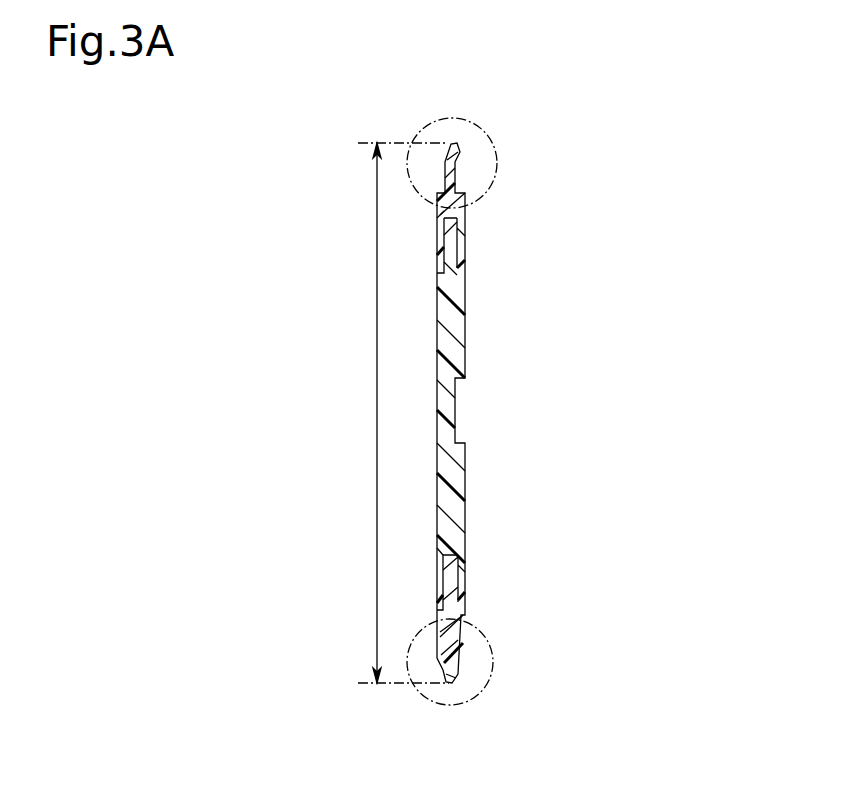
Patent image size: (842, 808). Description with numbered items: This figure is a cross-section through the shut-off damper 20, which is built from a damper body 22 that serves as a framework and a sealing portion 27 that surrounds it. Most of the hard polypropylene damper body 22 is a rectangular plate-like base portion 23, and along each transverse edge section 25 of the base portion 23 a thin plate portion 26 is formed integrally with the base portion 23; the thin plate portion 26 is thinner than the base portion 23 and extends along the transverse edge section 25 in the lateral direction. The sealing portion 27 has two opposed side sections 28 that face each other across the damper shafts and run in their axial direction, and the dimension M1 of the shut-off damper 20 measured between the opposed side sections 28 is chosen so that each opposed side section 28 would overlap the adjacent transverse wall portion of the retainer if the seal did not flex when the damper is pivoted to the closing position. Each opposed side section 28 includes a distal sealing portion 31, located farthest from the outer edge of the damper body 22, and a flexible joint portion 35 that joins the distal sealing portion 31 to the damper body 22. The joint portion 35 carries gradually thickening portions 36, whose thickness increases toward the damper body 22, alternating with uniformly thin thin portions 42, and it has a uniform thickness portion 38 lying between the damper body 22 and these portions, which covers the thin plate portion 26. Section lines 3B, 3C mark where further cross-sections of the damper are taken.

The shut-off damper 20 is at (478, 410).
The damper body 22 is at (507, 413).
The base portion 23 is at (460, 331).
The transverse edge section 25 is at (460, 292).
The thin plate portion 26 is at (450, 258).
The sealing portion 27 is at (465, 237).
The opposed side section 28 is at (523, 415).
The distal sealing portion 31 is at (457, 148).
The joint portion 35 is at (517, 417).
The gradually thickening portion 36 is at (456, 658).
The uniform thickness portion 38 is at (455, 206).
The thin portion 42 is at (456, 173).
The dimension of the shut-off damper M1 is at (377, 410).
The section line 3B is at (420, 130).
The section line 3C is at (440, 700).